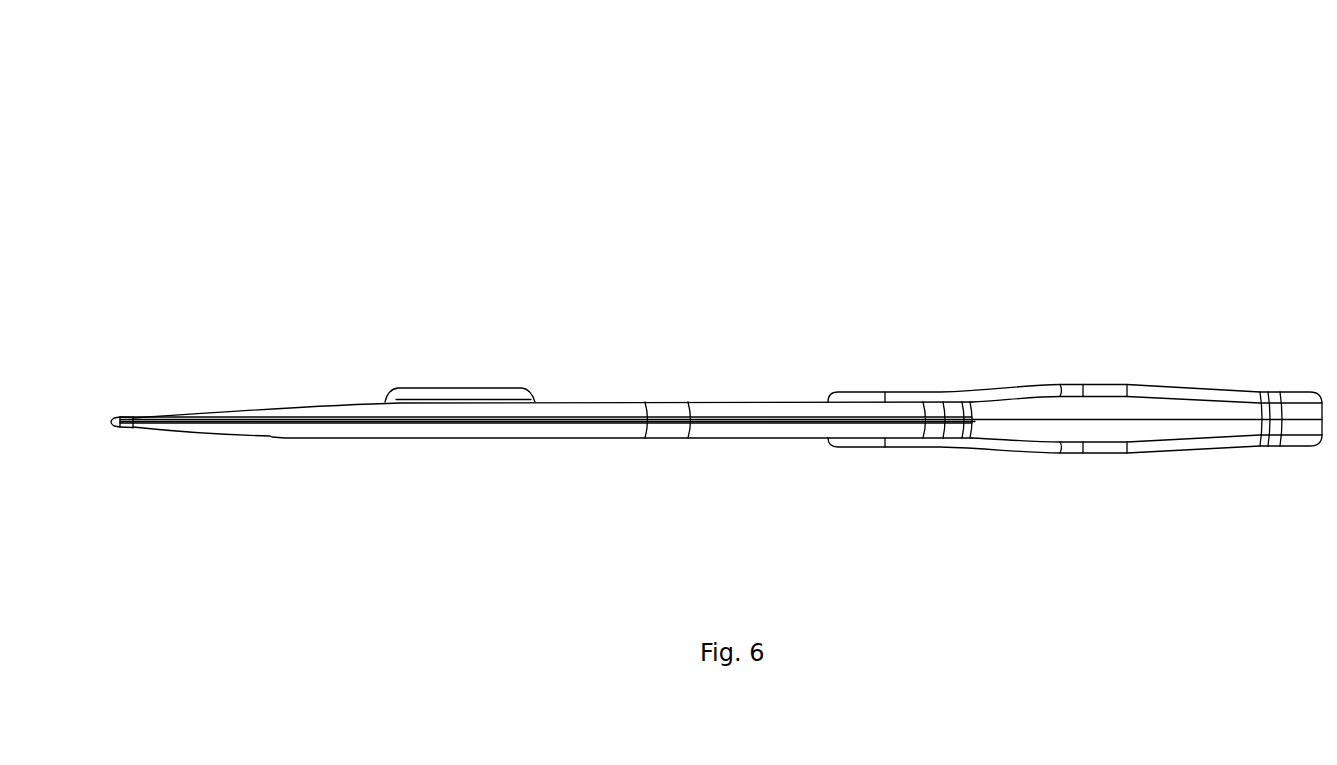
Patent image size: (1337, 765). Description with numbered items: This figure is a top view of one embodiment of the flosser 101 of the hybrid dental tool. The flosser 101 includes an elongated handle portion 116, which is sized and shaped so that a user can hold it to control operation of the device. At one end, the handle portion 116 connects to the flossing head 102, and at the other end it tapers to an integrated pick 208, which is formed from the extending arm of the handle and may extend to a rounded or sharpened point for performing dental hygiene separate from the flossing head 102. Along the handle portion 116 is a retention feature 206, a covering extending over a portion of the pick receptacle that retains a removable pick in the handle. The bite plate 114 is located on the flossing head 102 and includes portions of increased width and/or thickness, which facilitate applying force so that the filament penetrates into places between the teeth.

The flosser 101 is at (716, 321).
The flossing head 102 is at (1075, 441).
The bite plate 114 is at (1144, 398).
The handle portion 116 is at (455, 462).
The retention feature 206 is at (452, 389).
The integrated pick 208 is at (142, 428).